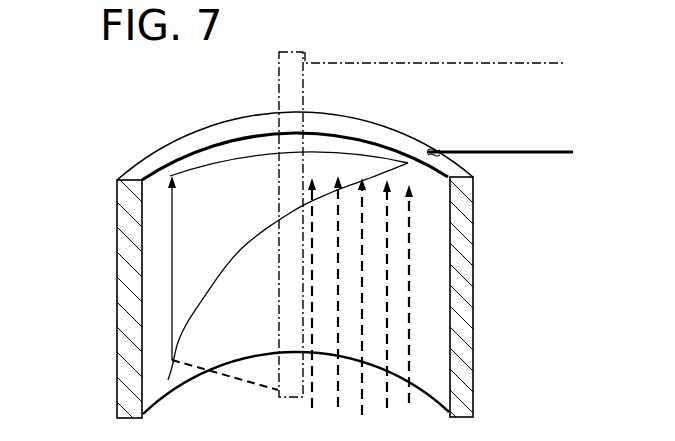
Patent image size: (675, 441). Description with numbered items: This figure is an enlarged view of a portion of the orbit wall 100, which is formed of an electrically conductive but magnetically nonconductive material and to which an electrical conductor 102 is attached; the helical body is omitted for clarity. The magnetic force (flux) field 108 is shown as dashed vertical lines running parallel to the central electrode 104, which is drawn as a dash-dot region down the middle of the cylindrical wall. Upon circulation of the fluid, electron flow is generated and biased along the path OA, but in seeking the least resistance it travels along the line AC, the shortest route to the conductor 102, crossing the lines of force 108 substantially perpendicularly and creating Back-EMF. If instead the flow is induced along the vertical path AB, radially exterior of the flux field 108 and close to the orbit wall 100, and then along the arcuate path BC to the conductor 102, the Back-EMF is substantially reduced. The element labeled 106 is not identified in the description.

The orbit wall 100 is at (112, 328).
The electrical conductor 102 is at (533, 148).
The central electrode 104 is at (277, 76).
The upper reference line 106 is at (470, 56).
The force (flux) field 108 is at (418, 314).